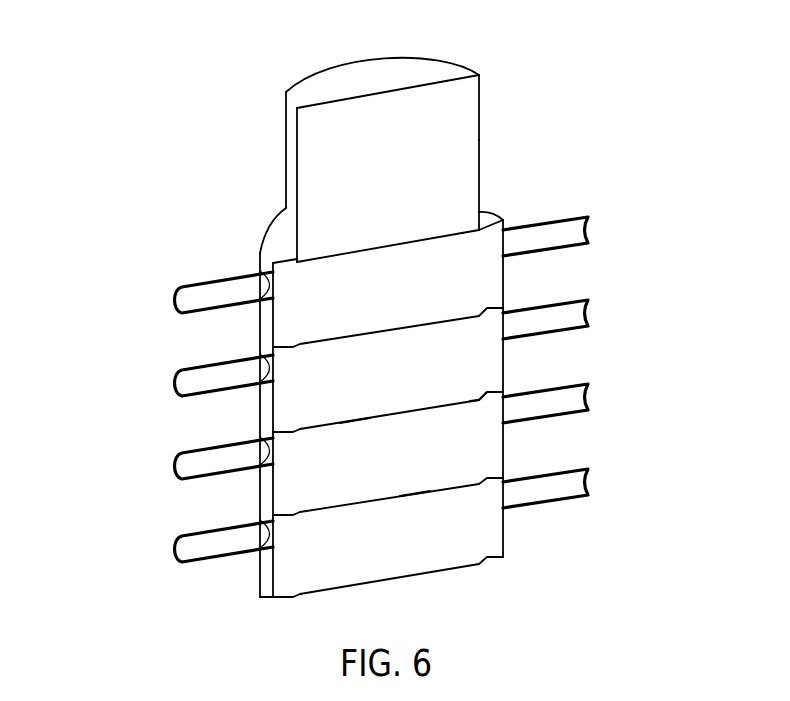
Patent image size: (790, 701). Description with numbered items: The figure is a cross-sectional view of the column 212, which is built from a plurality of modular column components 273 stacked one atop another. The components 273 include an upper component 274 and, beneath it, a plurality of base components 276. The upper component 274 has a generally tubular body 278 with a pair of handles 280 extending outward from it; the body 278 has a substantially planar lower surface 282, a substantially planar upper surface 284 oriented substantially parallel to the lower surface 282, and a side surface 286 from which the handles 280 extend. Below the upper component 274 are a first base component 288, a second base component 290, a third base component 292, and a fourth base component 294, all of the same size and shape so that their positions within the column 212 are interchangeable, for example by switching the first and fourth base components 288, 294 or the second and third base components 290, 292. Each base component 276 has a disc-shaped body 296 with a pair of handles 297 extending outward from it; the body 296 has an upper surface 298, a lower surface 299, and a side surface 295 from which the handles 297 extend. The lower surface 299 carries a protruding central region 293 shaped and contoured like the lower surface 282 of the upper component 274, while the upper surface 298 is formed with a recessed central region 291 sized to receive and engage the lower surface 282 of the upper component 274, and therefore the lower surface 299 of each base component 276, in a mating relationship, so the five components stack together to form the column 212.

The column 212 is at (185, 103).
The modular column components 273 is at (298, 360).
The upper component 274 is at (497, 58).
The base component 276 is at (572, 347).
The tubular body 278 is at (492, 159).
The handles 280 is at (567, 72).
The lower surface 282 is at (420, 240).
The upper surface 284 is at (418, 70).
The side surface 286 is at (481, 130).
The first base component 288 is at (240, 571).
The second base component 290 is at (240, 497).
The recessed central region 291 is at (440, 408).
The third base component 292 is at (242, 405).
The protruding central region 293 is at (330, 507).
The fourth base component 294 is at (243, 319).
The side surface 295 is at (270, 433).
The disc-shaped body 296 is at (514, 447).
The handles 297 is at (588, 388).
The upper surface 298 is at (355, 431).
The lower surface 299 is at (417, 481).